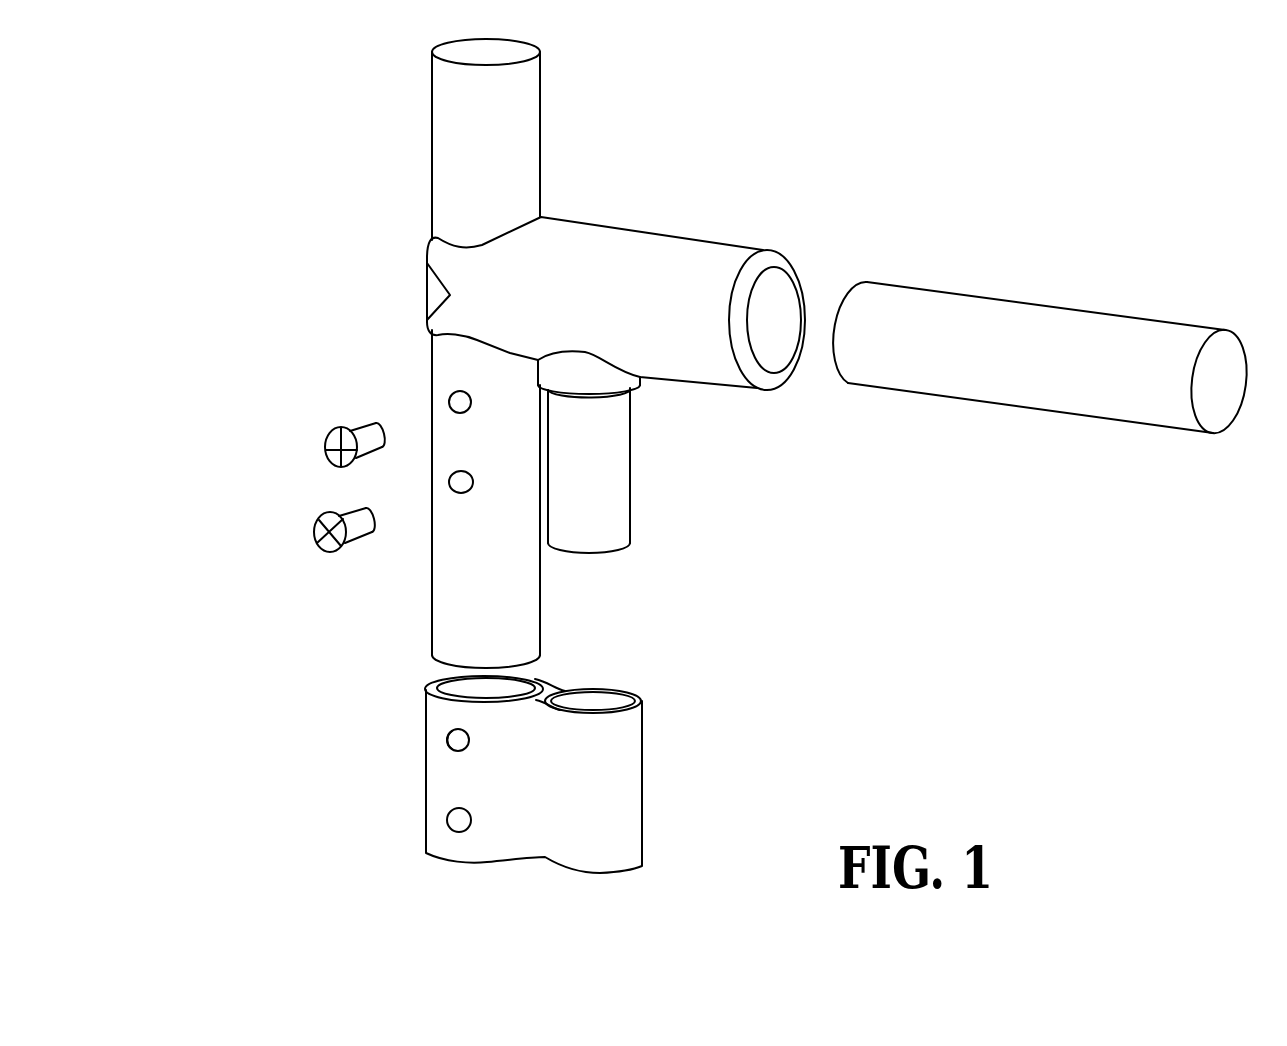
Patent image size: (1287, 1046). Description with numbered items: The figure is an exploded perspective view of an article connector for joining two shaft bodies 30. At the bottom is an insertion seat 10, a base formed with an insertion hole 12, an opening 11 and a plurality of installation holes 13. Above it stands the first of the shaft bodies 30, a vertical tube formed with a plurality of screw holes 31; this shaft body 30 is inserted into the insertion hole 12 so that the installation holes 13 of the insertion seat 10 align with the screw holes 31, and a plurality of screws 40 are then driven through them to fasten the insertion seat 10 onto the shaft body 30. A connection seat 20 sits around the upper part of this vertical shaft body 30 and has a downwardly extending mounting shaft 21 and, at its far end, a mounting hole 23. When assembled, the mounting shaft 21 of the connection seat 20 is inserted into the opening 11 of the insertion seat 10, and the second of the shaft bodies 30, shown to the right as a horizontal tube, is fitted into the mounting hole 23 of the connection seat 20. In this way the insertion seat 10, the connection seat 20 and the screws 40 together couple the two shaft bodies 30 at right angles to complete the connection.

The insertion seat 10 is at (443, 775).
The opening 11 is at (642, 698).
The insertion hole 12 is at (447, 698).
The installation holes 13 is at (464, 811).
The connection seat 20 is at (663, 268).
The mounting shaft 21 is at (607, 472).
The mounting hole 23 is at (750, 313).
The shaft bodies 30 is at (457, 143).
The screw holes 31 is at (443, 407).
The screws 40 is at (328, 457).